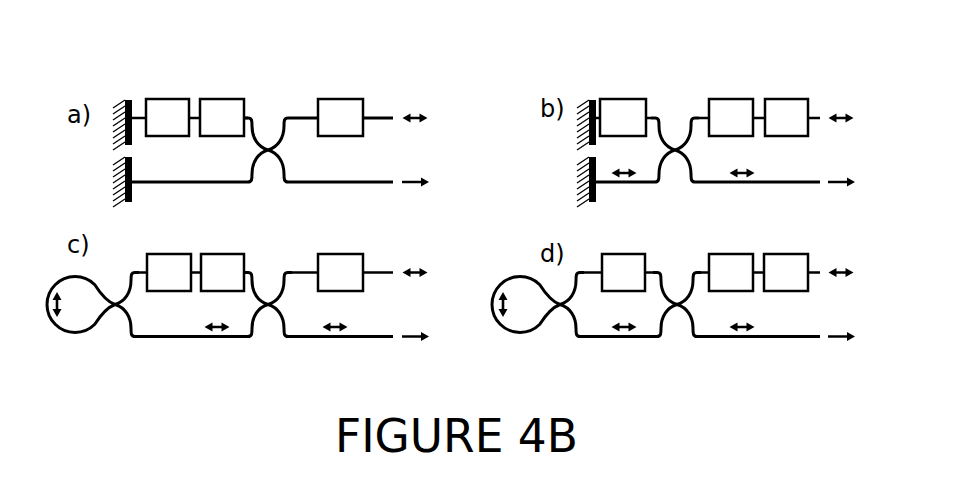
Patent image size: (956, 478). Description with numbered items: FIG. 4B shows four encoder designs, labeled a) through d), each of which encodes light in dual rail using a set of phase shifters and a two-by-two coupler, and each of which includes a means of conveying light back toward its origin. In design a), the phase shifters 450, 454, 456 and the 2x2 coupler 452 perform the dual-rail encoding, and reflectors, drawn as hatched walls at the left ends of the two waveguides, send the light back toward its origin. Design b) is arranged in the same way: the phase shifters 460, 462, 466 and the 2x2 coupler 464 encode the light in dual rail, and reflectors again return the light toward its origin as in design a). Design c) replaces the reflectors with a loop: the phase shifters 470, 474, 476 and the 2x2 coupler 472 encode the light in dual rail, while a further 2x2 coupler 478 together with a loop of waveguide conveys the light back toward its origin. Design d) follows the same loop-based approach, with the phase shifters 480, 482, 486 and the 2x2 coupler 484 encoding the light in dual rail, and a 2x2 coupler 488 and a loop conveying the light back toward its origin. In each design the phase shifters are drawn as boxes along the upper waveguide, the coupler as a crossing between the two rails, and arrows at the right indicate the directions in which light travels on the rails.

The phase shifter 450 is at (338, 103).
The 2x2 coupler 452 is at (270, 147).
The phase shifter 454 is at (228, 106).
The phase shifter 456 is at (172, 107).
The phase shifter 460 is at (785, 106).
The phase shifter 462 is at (725, 103).
The 2x2 coupler 464 is at (676, 147).
The phase shifter 466 is at (630, 106).
The phase shifter 470 is at (337, 266).
The 2x2 coupler 472 is at (268, 308).
The phase shifter 474 is at (222, 268).
The phase shifter 476 is at (172, 268).
The 2x2 coupler 478 is at (116, 307).
The phase shifter 480 is at (785, 268).
The phase shifter 482 is at (726, 268).
The 2x2 coupler 484 is at (678, 308).
The phase shifter 486 is at (620, 268).
The 2x2 coupler 488 is at (562, 307).